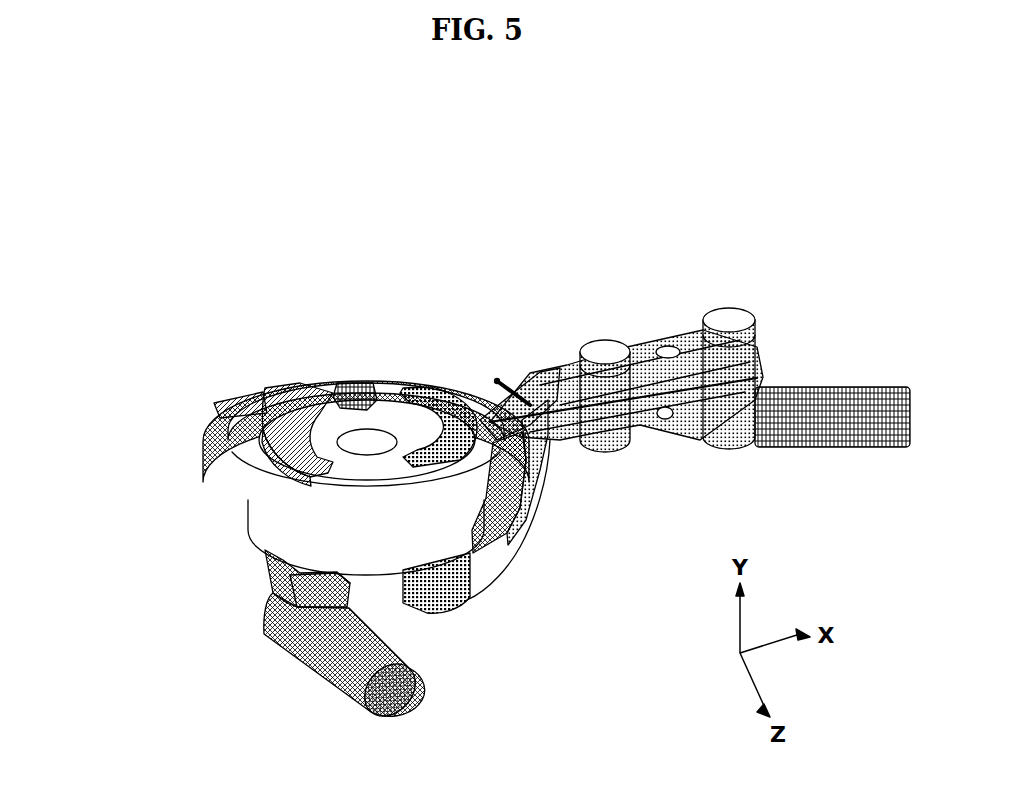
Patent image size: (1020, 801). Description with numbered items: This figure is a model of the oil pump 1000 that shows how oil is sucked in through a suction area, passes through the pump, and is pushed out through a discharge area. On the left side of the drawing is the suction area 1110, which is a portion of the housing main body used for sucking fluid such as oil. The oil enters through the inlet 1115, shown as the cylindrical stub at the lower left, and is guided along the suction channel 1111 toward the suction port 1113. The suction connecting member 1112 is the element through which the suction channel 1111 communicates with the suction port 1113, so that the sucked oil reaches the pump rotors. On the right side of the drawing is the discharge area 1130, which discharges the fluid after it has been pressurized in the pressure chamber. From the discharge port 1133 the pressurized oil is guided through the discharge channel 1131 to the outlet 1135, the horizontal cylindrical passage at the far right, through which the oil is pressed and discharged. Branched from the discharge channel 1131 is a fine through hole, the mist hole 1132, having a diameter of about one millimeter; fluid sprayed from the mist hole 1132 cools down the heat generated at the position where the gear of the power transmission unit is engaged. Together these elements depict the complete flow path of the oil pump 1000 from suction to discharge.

The oil pump 1000 is at (220, 102).
The suction area 1110 is at (97, 323).
The suction channel 1111 is at (278, 614).
The suction connecting member 1112 is at (247, 410).
The suction port 1113 is at (283, 392).
The inlet 1115 is at (380, 693).
The discharge area 1130 is at (892, 240).
The discharge channel 1131 is at (573, 460).
The mist hole 1132 is at (533, 383).
The discharge port 1133 is at (423, 390).
The outlet 1135 is at (905, 408).